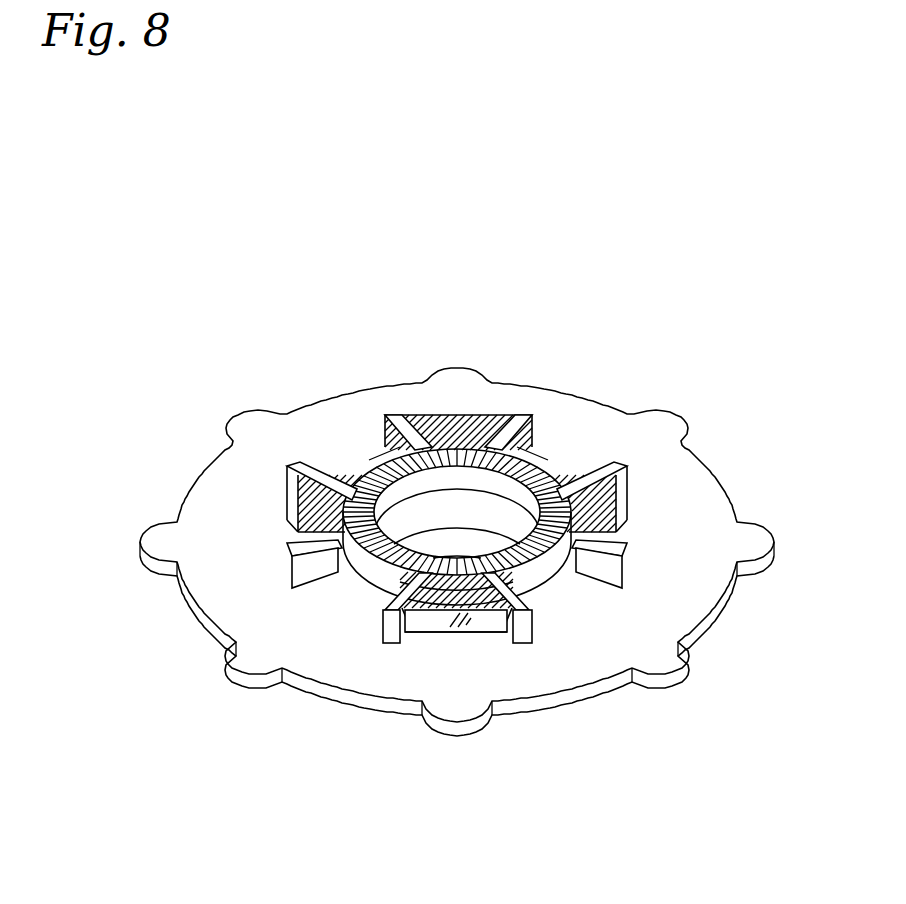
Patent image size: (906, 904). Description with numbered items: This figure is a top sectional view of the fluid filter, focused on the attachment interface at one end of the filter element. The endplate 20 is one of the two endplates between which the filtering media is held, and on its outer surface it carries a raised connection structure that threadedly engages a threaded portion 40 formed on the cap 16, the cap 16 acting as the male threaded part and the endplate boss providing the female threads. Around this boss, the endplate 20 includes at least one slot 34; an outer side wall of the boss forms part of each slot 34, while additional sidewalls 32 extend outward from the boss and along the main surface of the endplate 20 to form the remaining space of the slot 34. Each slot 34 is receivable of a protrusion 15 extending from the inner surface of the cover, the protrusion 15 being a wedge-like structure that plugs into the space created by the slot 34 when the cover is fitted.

The endplate 20 is at (638, 342).
The cap 16 is at (365, 447).
The protrusion 15 is at (430, 418).
The sidewalls 32 is at (290, 587).
The threaded portion 40 is at (433, 607).
The slot 34 is at (438, 636).